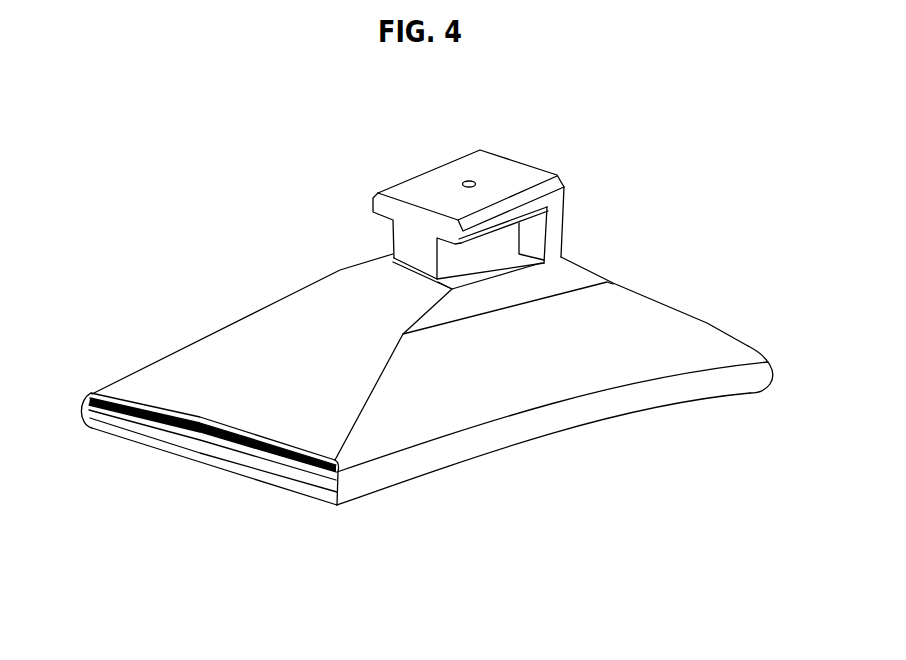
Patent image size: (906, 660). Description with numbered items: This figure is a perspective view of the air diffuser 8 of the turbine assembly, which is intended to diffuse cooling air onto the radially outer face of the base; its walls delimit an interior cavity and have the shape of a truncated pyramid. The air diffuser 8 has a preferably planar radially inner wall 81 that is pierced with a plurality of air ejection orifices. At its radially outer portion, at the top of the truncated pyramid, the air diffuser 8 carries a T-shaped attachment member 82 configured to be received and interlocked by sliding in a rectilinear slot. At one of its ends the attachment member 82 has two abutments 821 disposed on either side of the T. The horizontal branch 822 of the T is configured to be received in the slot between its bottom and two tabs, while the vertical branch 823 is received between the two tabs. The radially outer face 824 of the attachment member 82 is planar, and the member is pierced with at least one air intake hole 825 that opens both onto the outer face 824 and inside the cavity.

The air diffuser 8 is at (243, 227).
The radially inner wall 81 is at (514, 445).
The attachment member 82 is at (534, 153).
The abutments 821 is at (535, 238).
The horizontal branch 822 is at (380, 212).
The vertical branch 823 is at (410, 252).
The radially outer face 824 is at (441, 192).
The air intake hole 825 is at (470, 178).